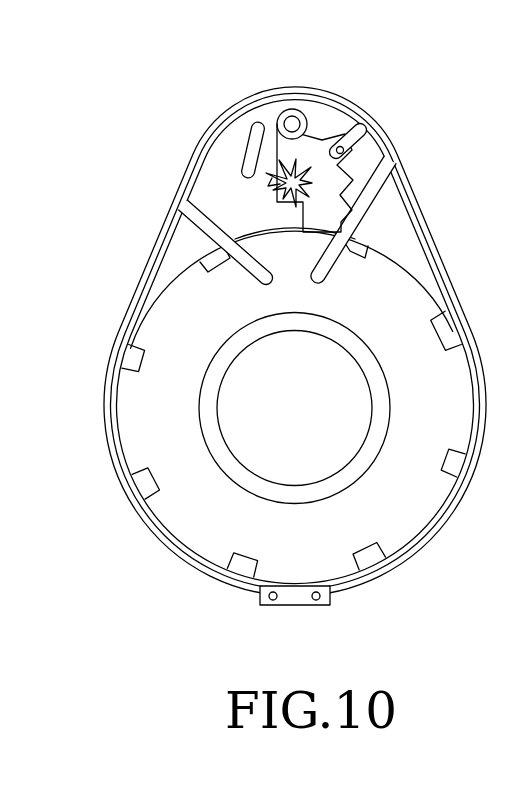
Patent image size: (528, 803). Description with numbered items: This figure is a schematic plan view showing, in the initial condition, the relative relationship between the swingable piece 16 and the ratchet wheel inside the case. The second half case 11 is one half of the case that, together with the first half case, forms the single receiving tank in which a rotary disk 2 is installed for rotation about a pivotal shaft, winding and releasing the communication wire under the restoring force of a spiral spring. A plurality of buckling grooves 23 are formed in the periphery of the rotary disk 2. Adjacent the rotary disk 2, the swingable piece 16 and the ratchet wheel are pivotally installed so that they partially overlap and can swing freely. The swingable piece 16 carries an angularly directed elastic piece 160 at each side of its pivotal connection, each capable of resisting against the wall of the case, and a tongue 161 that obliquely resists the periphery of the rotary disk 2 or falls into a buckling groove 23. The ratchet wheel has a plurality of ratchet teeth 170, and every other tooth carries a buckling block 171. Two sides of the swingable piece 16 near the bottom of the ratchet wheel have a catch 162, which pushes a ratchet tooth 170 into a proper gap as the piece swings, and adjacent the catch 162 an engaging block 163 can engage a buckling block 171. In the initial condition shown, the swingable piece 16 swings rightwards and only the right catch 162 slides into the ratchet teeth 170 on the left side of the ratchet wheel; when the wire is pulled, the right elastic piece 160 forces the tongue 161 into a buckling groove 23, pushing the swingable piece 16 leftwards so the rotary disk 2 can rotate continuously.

The rotary disk 2 is at (405, 508).
The second half case 11 is at (297, 600).
The swingable piece 16 is at (338, 122).
The buckling groove 23 is at (365, 247).
The elastic piece 160 is at (256, 110).
The tongue 161 is at (385, 182).
The catch 162 is at (243, 157).
The engaging block 163 is at (275, 178).
The ratchet teeth 170 is at (292, 108).
The buckling block 171 is at (280, 158).